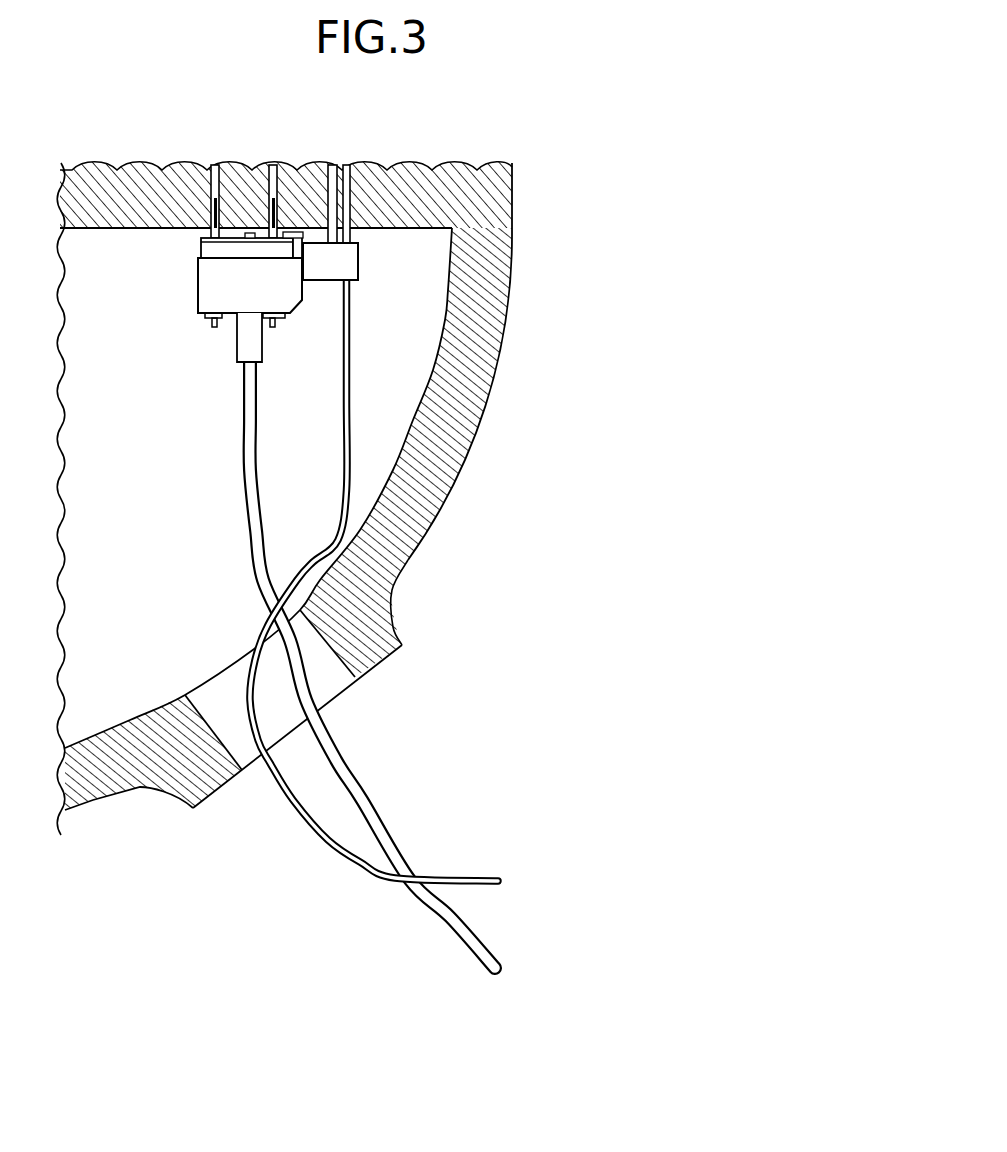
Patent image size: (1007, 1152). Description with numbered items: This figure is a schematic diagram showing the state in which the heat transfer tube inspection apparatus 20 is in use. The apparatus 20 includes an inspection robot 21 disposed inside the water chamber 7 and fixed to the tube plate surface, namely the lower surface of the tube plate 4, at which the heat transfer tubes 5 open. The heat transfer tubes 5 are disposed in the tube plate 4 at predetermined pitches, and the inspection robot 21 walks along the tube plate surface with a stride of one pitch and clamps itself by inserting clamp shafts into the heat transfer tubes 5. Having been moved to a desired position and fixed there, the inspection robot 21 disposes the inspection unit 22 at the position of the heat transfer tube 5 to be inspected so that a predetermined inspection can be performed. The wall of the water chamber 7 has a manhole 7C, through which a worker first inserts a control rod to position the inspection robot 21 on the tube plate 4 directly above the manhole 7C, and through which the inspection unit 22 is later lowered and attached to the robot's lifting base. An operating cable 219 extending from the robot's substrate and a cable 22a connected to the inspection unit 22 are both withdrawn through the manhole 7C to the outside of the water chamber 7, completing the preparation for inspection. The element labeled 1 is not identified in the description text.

The reactor pressure vessel wall 1 is at (472, 377).
The tube plate 4 is at (128, 207).
The heat transfer tube 5 is at (279, 170).
The water chamber 7 is at (150, 558).
The manhole 7C is at (253, 765).
The inspection apparatus 20 is at (436, 533).
The inspection robot 21 is at (192, 284).
The inspection unit 22 is at (365, 249).
The cable 22a is at (350, 408).
The operating cable 219 is at (345, 785).